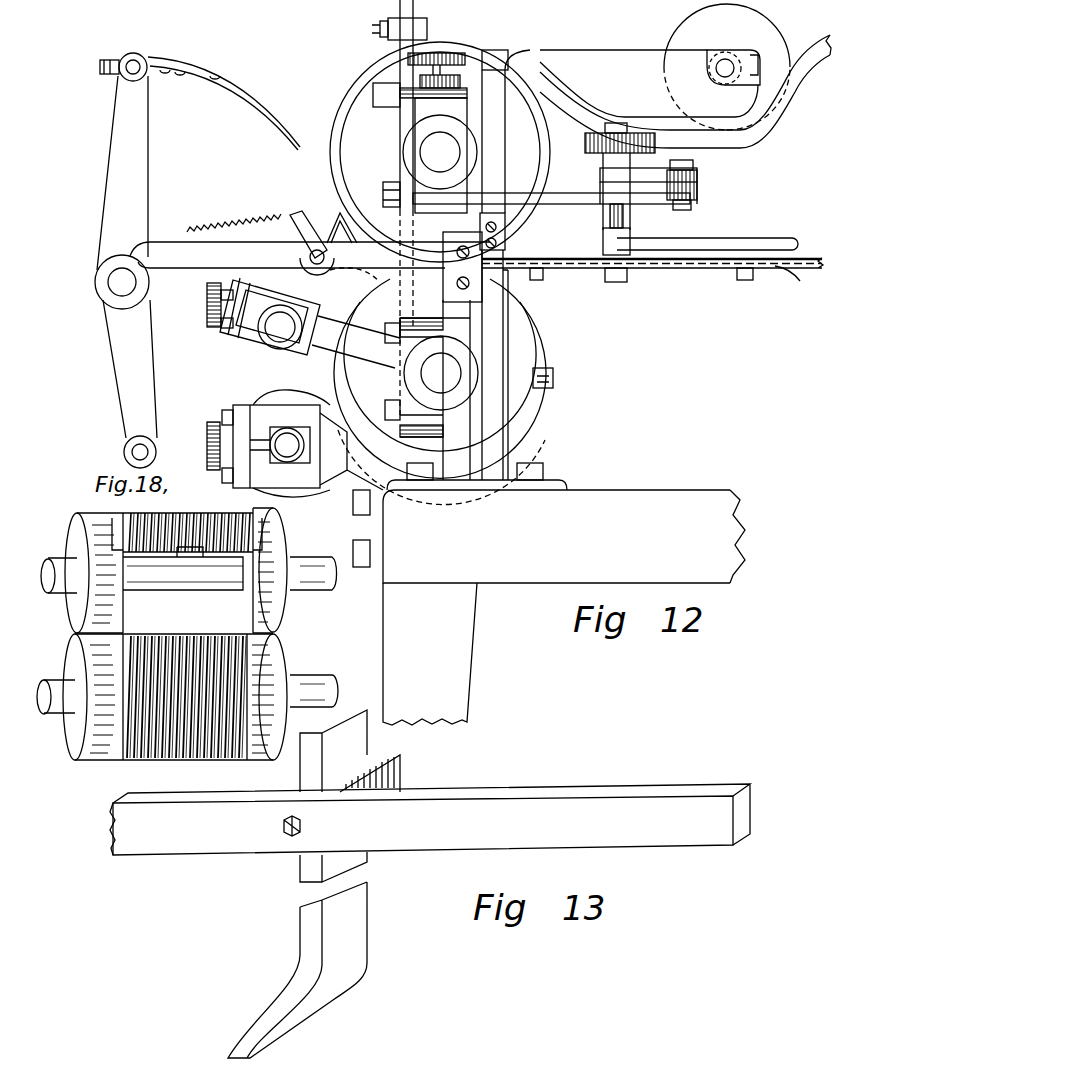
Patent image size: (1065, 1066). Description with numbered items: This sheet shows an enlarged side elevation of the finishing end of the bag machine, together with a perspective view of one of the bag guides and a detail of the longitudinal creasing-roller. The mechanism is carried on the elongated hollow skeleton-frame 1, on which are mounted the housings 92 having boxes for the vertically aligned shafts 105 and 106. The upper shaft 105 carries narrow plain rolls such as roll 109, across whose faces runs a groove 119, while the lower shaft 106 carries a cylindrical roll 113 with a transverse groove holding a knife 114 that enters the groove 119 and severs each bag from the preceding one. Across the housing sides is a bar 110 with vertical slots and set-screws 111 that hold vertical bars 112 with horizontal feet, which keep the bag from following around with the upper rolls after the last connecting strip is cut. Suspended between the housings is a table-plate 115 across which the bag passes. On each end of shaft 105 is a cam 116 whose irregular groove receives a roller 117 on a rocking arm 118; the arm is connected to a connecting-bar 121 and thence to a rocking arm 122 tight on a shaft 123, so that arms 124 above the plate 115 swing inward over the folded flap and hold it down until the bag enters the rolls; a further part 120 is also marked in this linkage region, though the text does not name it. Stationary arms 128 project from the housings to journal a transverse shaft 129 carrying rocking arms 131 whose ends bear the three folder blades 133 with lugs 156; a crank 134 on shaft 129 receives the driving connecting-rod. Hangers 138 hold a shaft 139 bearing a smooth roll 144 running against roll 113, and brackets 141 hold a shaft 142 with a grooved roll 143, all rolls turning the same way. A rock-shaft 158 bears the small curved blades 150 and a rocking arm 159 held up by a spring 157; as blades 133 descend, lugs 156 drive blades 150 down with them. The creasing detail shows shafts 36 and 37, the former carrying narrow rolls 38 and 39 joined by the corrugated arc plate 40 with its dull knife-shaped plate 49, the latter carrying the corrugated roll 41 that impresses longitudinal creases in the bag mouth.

In FIG. 12, the skeleton-frame 1 is at (549, 594).
In FIG. 18, the upper shaft 36 is at (313, 573).
In FIG. 18, the shaft 37 is at (314, 691).
In FIG. 18, the narrow roll 38 is at (108, 527).
In FIG. 18, the narrow roll 39 is at (288, 522).
In FIG. 18, the corrugated plate 40 is at (165, 518).
In FIG. 18, the corrugated roll 41 is at (230, 661).
In FIG. 18, the knife-shaped plate 49 is at (186, 560).
In FIG. 12, the housings 92 is at (495, 365).
In FIG. 12, the shaft 105 is at (440, 152).
In FIG. 12, the shaft 106 is at (441, 373).
In FIG. 12, the narrow roll 109 is at (440, 152).
In FIG. 12, the bar 110 is at (412, 32).
In FIG. 13, the bar 110 is at (430, 819).
In FIG. 13, the set-screw 111 is at (284, 826).
In FIG. 13, the vertical bar 112 is at (314, 884).
In FIG. 12, the cylindrical roll 113 is at (440, 392).
In FIG. 12, the knife 114 is at (553, 372).
In FIG. 12, the table-plate 115 is at (572, 268).
In FIG. 12, the cam 116 is at (433, 96).
In FIG. 12, the roller 117 is at (400, 195).
In FIG. 12, the rocking arm 118 is at (551, 138).
In FIG. 12, the groove 119 is at (543, 152).
In FIG. 12, the screw block 120 is at (505, 228).
In FIG. 12, the connecting-bar 121 is at (697, 186).
In FIG. 12, the rocking arm 122 is at (693, 176).
In FIG. 12, the shaft 123 is at (627, 219).
In FIG. 12, the arm 124 is at (707, 234).
In FIG. 12, the stationary arm 128 is at (310, 256).
In FIG. 12, the transverse shaft 129 is at (125, 73).
In FIG. 12, the rocking arm 131 is at (122, 173).
In FIG. 12, the folder blades 133 is at (224, 103).
In FIG. 12, the crank 134 is at (130, 384).
In FIG. 12, the hanger 138 is at (356, 344).
In FIG. 12, the shaft 139 is at (254, 316).
In FIG. 12, the bracket 141 is at (347, 451).
In FIG. 12, the shaft 142 is at (263, 446).
In FIG. 12, the roll 143 is at (291, 443).
In FIG. 12, the cylindrical roll 144 is at (272, 315).
In FIG. 12, the curved blades 150 is at (323, 232).
In FIG. 12, the lug 156 is at (199, 62).
In FIG. 12, the spring 157 is at (234, 213).
In FIG. 12, the rock-shaft 158 is at (355, 285).
In FIG. 12, the rocking arm 159 is at (273, 177).